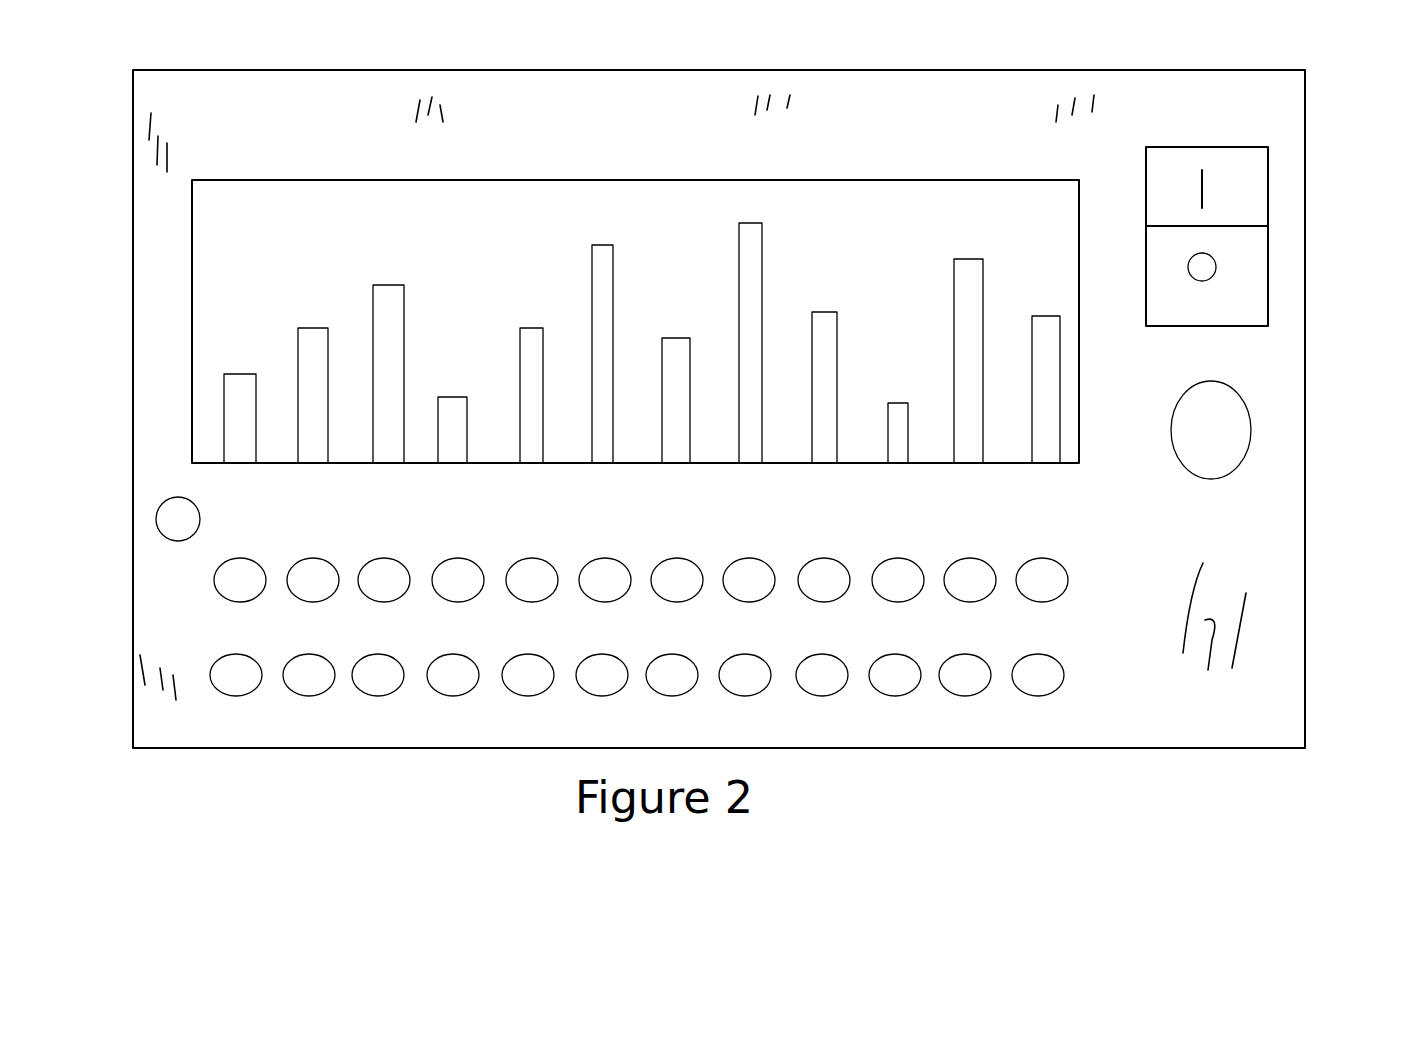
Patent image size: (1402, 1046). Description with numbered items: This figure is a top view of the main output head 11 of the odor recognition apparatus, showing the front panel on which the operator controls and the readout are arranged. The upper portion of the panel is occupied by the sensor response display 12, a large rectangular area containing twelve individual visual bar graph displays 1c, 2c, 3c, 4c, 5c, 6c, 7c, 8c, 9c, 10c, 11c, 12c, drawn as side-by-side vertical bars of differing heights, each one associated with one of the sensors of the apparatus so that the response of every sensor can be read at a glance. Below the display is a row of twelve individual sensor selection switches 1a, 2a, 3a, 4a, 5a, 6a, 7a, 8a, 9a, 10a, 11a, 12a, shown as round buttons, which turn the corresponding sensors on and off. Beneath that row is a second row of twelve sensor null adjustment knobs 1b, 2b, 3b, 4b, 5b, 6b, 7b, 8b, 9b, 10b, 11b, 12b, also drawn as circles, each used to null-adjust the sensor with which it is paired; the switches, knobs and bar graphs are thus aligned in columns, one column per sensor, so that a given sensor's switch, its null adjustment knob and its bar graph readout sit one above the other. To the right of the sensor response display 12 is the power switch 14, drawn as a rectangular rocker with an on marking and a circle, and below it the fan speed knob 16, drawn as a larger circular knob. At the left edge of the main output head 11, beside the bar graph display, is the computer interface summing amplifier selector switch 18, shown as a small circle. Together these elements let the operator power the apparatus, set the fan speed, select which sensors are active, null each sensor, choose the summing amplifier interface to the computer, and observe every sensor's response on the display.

The main output head 11 is at (132, 604).
The sensor response display 12 is at (904, 207).
The power switch 14 is at (1252, 268).
The fan speed knob 16 is at (1240, 432).
The computer interface summing amplifier selector switch 18 is at (172, 519).
The sensor selection switch 1a is at (244, 596).
The sensor selection switch 2a is at (317, 596).
The sensor selection switch 3a is at (388, 596).
The sensor selection switch 4a is at (462, 596).
The sensor selection switch 5a is at (536, 596).
The sensor selection switch 6a is at (609, 596).
The sensor selection switch 7a is at (681, 596).
The sensor selection switch 8a is at (753, 596).
The sensor selection switch 9a is at (828, 596).
The sensor selection switch 10a is at (902, 596).
The sensor selection switch 11a is at (974, 596).
The sensor selection switch 12a is at (1046, 596).
The sensor null adjustment knob 1b is at (235, 688).
The sensor null adjustment knob 2b is at (308, 688).
The sensor null adjustment knob 3b is at (377, 688).
The sensor null adjustment knob 4b is at (452, 688).
The sensor null adjustment knob 5b is at (527, 688).
The sensor null adjustment knob 6b is at (601, 688).
The sensor null adjustment knob 7b is at (671, 688).
The sensor null adjustment knob 8b is at (744, 688).
The sensor null adjustment knob 9b is at (821, 688).
The sensor null adjustment knob 10b is at (894, 688).
The sensor null adjustment knob 11b is at (964, 688).
The sensor null adjustment knob 12b is at (1037, 688).
The visual bar graph display 1c is at (244, 481).
The visual bar graph display 2c is at (319, 481).
The visual bar graph display 3c is at (390, 481).
The visual bar graph display 4c is at (462, 481).
The visual bar graph display 5c is at (541, 481).
The visual bar graph display 6c is at (609, 481).
The visual bar graph display 7c is at (682, 481).
The visual bar graph display 8c is at (757, 481).
The visual bar graph display 9c is at (832, 481).
The visual bar graph display 10c is at (905, 481).
The visual bar graph display 11c is at (977, 481).
The visual bar graph display 12c is at (1055, 481).